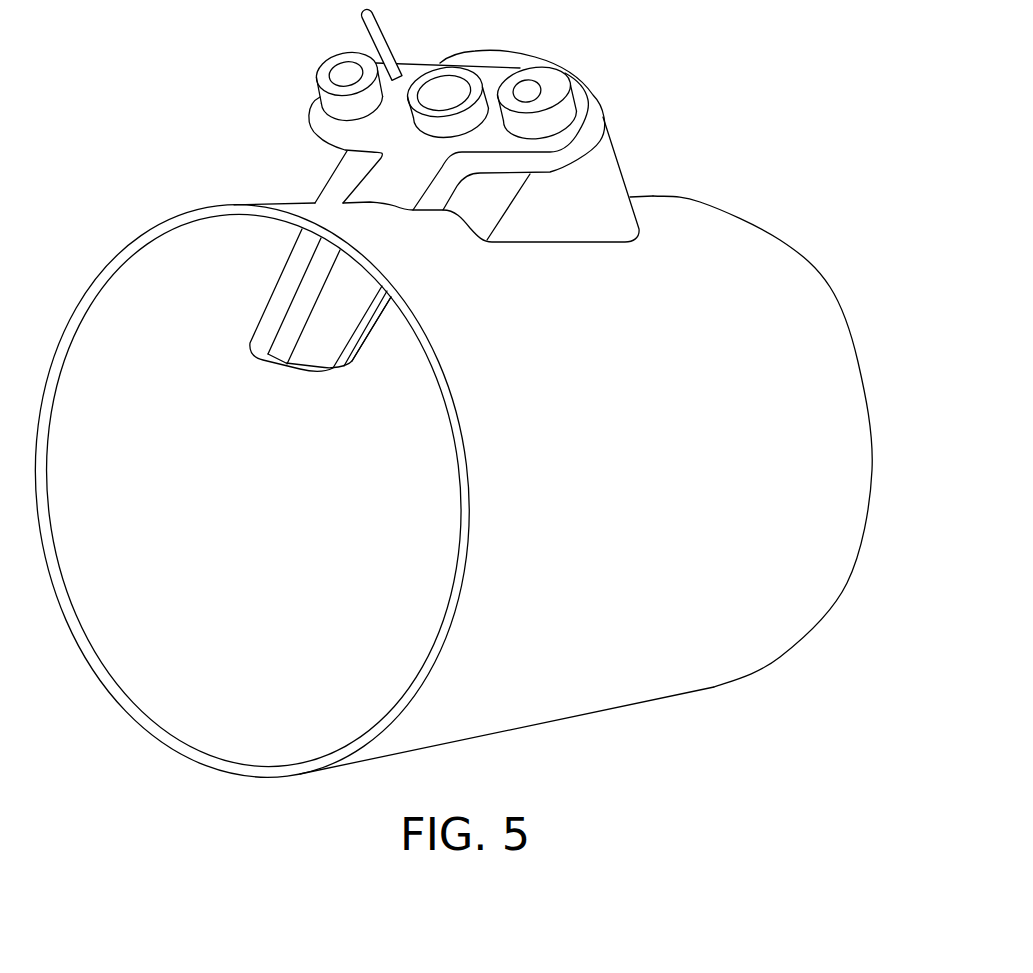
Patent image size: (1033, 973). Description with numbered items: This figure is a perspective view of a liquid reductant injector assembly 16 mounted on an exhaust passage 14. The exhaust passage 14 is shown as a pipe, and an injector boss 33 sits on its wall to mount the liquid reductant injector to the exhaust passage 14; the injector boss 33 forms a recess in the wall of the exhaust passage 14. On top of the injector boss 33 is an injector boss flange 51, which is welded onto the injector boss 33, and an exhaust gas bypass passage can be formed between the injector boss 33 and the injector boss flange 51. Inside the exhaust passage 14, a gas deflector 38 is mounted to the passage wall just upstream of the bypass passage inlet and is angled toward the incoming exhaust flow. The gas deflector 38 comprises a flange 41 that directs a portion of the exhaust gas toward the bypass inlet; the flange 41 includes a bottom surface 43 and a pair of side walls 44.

The exhaust passage 14 is at (263, 507).
The liquid reductant injector assembly 16 is at (604, 125).
The injector boss 33 is at (617, 174).
The gas deflector 38 is at (386, 350).
The flange 41 is at (320, 374).
The bottom surface 43 is at (368, 342).
The side walls 44 is at (277, 352).
The injector boss flange 51 is at (603, 107).